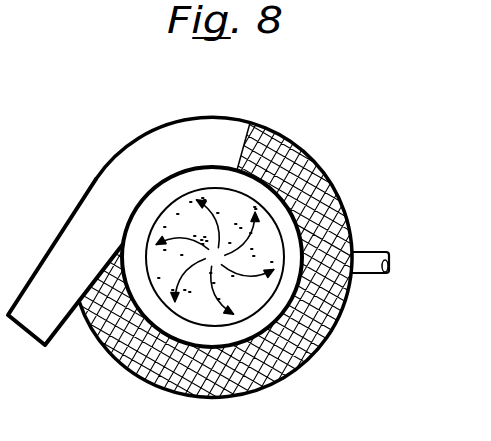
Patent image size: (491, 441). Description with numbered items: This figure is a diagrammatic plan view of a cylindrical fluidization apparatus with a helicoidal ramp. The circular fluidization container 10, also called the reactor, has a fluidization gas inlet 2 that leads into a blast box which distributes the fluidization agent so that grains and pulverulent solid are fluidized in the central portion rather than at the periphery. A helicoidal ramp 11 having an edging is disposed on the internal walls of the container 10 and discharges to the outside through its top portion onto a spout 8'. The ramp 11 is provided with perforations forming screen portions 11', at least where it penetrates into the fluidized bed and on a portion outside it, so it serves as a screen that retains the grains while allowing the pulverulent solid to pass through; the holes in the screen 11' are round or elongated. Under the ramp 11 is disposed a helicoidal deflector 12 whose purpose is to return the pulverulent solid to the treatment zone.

The fluidization gas inlet 2 is at (373, 273).
The spout 8' is at (65, 281).
The fluidization container 10 is at (317, 352).
The helicoidal ramp 11 is at (173, 162).
The screen portions 11' is at (216, 257).
The helicoidal deflector 12 is at (167, 190).